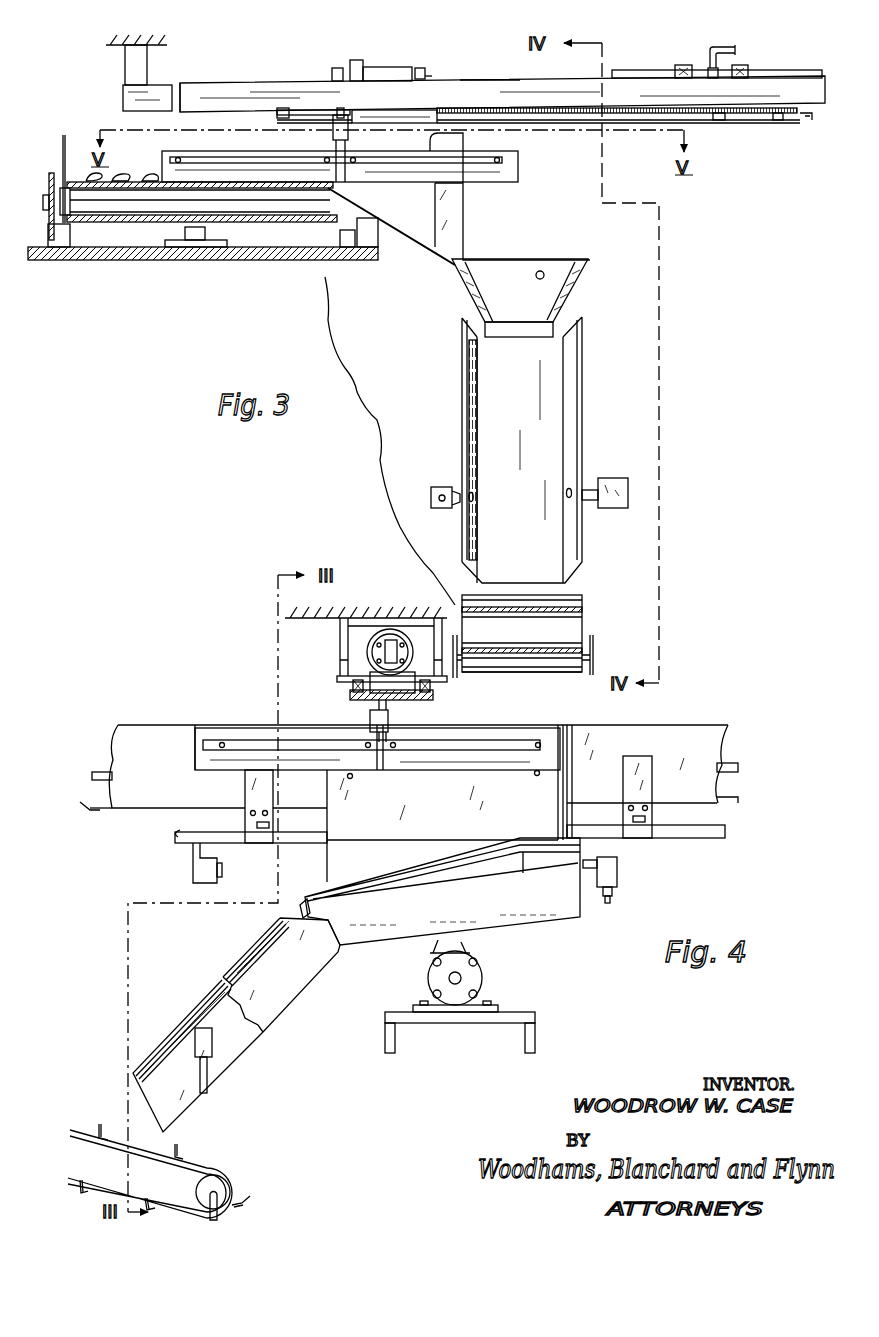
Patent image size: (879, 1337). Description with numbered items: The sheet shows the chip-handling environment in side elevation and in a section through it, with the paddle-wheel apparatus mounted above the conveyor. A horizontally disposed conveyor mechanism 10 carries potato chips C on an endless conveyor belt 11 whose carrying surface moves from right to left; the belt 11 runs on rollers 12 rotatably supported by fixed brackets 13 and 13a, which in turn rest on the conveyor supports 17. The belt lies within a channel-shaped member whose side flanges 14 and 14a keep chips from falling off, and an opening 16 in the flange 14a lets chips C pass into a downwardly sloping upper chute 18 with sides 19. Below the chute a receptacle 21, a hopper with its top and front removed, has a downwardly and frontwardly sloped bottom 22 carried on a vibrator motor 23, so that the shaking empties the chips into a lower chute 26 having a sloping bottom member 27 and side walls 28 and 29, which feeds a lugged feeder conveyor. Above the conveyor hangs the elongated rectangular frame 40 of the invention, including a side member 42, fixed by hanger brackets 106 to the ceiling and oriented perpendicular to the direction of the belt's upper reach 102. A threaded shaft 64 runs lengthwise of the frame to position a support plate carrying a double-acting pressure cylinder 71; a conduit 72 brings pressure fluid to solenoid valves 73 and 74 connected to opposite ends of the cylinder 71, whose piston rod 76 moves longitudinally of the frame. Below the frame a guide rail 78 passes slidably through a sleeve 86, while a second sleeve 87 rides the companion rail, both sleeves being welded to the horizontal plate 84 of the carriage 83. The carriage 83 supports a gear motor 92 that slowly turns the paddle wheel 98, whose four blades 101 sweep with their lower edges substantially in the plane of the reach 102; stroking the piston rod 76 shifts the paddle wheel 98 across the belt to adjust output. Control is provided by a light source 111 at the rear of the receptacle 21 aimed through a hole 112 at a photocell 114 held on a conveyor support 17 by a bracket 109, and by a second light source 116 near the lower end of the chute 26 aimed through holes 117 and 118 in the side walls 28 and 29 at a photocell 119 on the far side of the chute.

In FIG. 3, the conveyor mechanism 10 is at (121, 268).
In FIG. 4, the conveyor mechanism 10 is at (121, 820).
In FIG. 3, the endless conveyor belt 11 is at (74, 179).
In FIG. 4, the endless conveyor belt 11 is at (731, 763).
In FIG. 3, the rollers 12 is at (128, 223).
In FIG. 3, the bracket 13 is at (50, 180).
In FIG. 4, the bracket 13 is at (648, 815).
In FIG. 3, the bracket 13a is at (376, 207).
In FIG. 3, the side flange 14 is at (68, 147).
In FIG. 4, the side flange 14a is at (719, 740).
In FIG. 4, the opening 16 is at (197, 735).
In FIG. 3, the conveyor supports 17 is at (231, 252).
In FIG. 4, the conveyor supports 17 is at (726, 829).
In FIG. 3, the upper chute 18 is at (466, 228).
In FIG. 4, the upper chute 18 is at (318, 881).
In FIG. 3, the sides 19 is at (462, 137).
In FIG. 4, the sides 19 is at (327, 860).
In FIG. 3, the receptacle 21 is at (578, 298).
In FIG. 4, the receptacle 21 is at (551, 928).
In FIG. 3, the bottom 22 is at (503, 330).
In FIG. 4, the bottom 22 is at (545, 928).
In FIG. 4, the vibrator motor 23 is at (476, 985).
In FIG. 3, the lower chute 26 is at (456, 393).
In FIG. 4, the lower chute 26 is at (270, 1033).
In FIG. 3, the sloping bottom member 27 is at (521, 440).
In FIG. 4, the sloping bottom member 27 is at (292, 1002).
In FIG. 3, the side wall 28 is at (467, 430).
In FIG. 3, the side wall 29 is at (578, 426).
In FIG. 4, the side wall 29 is at (300, 986).
In FIG. 3, the frame 40 is at (267, 58).
In FIG. 4, the frame 40 is at (331, 662).
In FIG. 3, the side member 42 is at (293, 87).
In FIG. 3, the threaded shaft 64 is at (813, 110).
In FIG. 3, the double-acting pressure cylinder 71 is at (650, 54).
In FIG. 3, the conduit 72 is at (728, 46).
In FIG. 3, the solenoid valve 73 is at (693, 54).
In FIG. 3, the solenoid valve 74 is at (749, 65).
In FIG. 3, the piston rod 76 is at (493, 66).
In FIG. 3, the guide rail 78 is at (698, 118).
In FIG. 3, the carriage 83 is at (398, 106).
In FIG. 4, the carriage 83 is at (341, 700).
In FIG. 3, the horizontal plate 84 is at (340, 148).
In FIG. 4, the horizontal plate 84 is at (397, 700).
In FIG. 3, the sleeve 86 is at (388, 97).
In FIG. 4, the sleeve 86 is at (350, 688).
In FIG. 4, the sleeve 87 is at (431, 688).
In FIG. 3, the gear motor 92 is at (400, 71).
In FIG. 4, the gear motor 92 is at (388, 630).
In FIG. 3, the paddle wheel 98 is at (523, 149).
In FIG. 4, the paddle wheel 98 is at (470, 734).
In FIG. 3, the blades 101 is at (518, 178).
In FIG. 4, the blades 101 is at (521, 742).
In FIG. 3, the upper reach 102 is at (237, 193).
In FIG. 4, the upper reach 102 is at (97, 772).
In FIG. 3, the hanger brackets 106 is at (140, 72).
In FIG. 4, the hanger brackets 106 is at (340, 627).
In FIG. 4, the bracket 109 is at (177, 832).
In FIG. 4, the light source 111 is at (609, 873).
In FIG. 3, the hole 112 is at (543, 272).
In FIG. 4, the photocell 114 is at (205, 876).
In FIG. 3, the light source 116 is at (635, 463).
In FIG. 4, the light source 116 is at (211, 1043).
In FIG. 3, the hole 117 is at (476, 496).
In FIG. 3, the hole 118 is at (567, 498).
In FIG. 3, the photocell 119 is at (433, 486).
In FIG. 3, the chips C is at (125, 175).